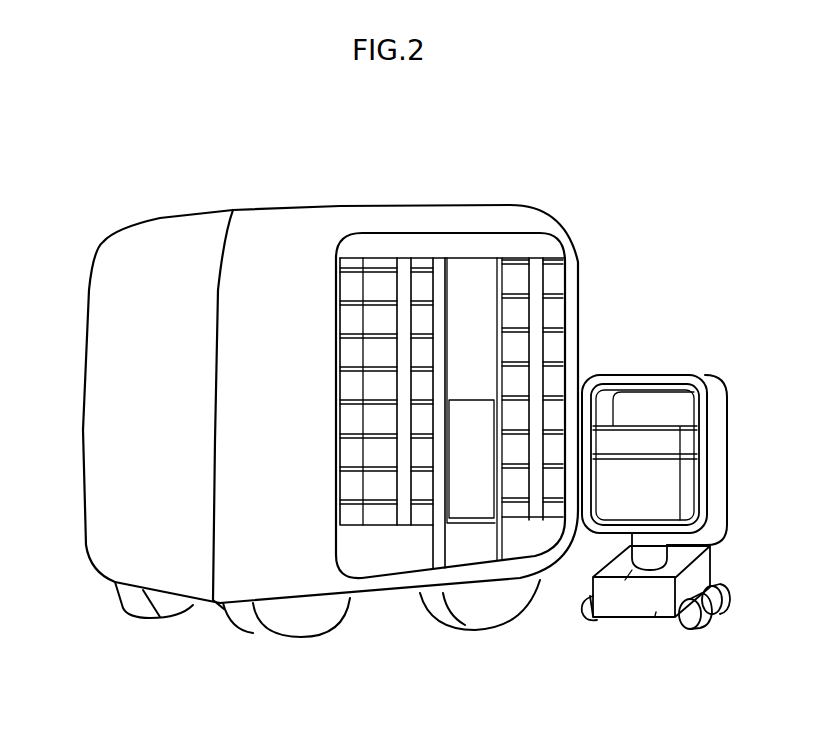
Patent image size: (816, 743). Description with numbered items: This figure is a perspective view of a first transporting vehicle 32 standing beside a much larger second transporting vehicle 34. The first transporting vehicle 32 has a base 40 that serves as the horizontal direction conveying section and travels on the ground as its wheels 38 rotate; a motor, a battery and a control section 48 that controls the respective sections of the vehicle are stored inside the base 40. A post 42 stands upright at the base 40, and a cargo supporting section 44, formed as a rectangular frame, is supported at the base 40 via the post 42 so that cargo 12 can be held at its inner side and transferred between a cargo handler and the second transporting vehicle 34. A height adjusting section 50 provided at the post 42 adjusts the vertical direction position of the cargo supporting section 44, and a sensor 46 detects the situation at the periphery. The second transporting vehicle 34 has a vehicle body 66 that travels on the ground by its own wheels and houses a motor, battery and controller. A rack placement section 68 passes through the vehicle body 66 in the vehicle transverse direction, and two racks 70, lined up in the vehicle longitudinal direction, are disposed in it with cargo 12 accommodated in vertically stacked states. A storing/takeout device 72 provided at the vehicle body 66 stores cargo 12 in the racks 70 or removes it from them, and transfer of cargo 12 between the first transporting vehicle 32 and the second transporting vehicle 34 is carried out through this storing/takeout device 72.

The cargo 12 is at (358, 292).
The first transporting vehicle 32 is at (723, 380).
The second transporting vehicle 34 is at (285, 203).
The wheels 38 is at (708, 622).
The base 40 is at (635, 618).
The post 42 is at (625, 546).
The cargo supporting section 44 is at (732, 450).
The sensor 46 is at (308, 627).
The control section 48 is at (655, 617).
The height adjusting section 50 is at (632, 573).
The vehicle body 66 is at (92, 310).
The rack placement section 68 is at (397, 560).
The racks 70 is at (380, 282).
The storing/takeout device 72 is at (470, 497).